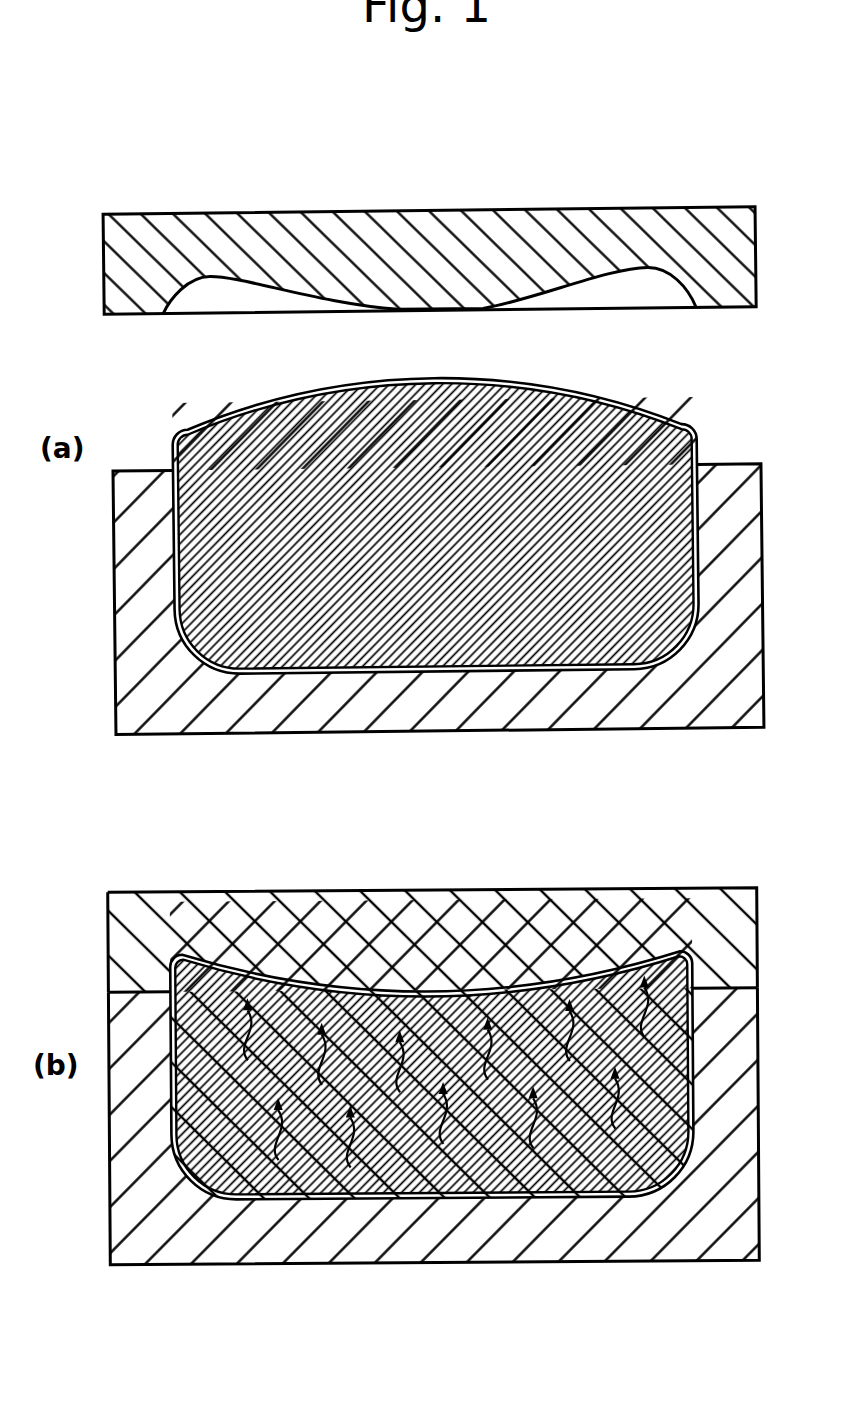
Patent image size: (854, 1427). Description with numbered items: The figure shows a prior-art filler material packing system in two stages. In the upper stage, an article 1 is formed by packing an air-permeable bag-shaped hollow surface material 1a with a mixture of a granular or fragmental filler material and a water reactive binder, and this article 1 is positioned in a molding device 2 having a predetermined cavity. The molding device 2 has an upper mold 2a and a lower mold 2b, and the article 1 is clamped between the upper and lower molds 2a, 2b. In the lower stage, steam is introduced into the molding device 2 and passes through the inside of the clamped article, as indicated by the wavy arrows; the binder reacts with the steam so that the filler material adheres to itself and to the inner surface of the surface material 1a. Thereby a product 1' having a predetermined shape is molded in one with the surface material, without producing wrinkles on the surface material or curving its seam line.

The article 1 is at (435, 496).
The bag-shaped hollow surface material 1a is at (455, 378).
The product 1' is at (431, 1011).
The molding device 2 is at (455, 179).
The upper mold 2a is at (201, 228).
The lower mold 2b is at (135, 490).